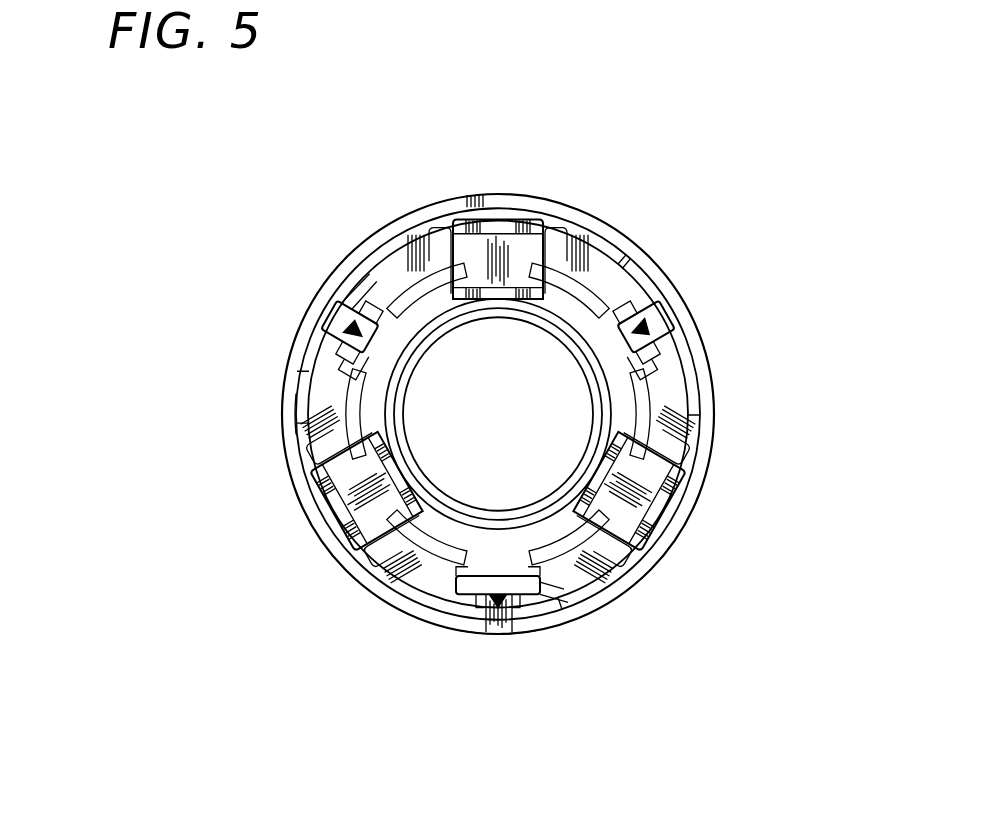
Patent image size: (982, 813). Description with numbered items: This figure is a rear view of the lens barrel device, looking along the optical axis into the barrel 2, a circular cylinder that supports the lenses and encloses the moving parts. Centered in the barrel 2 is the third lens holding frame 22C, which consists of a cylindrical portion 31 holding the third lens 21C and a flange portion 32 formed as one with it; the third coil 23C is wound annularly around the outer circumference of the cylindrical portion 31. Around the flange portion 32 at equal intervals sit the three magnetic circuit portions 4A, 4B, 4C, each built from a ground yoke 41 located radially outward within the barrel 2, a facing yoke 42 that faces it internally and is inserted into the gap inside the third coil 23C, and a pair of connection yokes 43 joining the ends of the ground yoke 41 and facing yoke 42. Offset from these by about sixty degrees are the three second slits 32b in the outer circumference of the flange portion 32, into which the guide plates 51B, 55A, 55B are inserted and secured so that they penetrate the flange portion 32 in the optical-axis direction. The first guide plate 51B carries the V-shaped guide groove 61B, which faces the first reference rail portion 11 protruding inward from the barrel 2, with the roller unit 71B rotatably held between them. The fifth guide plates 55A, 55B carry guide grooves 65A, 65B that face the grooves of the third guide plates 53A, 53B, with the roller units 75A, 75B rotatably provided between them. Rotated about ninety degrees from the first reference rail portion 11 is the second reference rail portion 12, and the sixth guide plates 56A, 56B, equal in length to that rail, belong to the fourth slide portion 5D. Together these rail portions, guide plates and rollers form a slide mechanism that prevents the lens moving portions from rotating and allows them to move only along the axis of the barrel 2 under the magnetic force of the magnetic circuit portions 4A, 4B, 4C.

The barrel 2 is at (632, 600).
The second reference rail portion 12 is at (694, 398).
The second slits 32b is at (645, 382).
The cylindrical portion 31 is at (312, 424).
The third lens holding frame 22C is at (320, 397).
The flange portion 32 is at (576, 582).
The guide groove 65B is at (584, 372).
The guide groove 65A is at (416, 364).
The guide groove 61B is at (503, 532).
The first magnetic circuit portion 4A is at (501, 230).
The second magnetic circuit portion 4B is at (343, 517).
The third magnetic circuit portion 4C is at (672, 533).
The facing yoke 42 is at (465, 262).
The connection yoke 43 is at (490, 262).
The ground yoke 41 is at (523, 228).
The third coil 23C is at (543, 350).
The third lens 21C is at (625, 300).
The third guide plate 53A is at (343, 307).
The fifth guide plate 55A is at (330, 343).
The roller unit 75A is at (330, 337).
The sixth guide plate 56B is at (385, 242).
The third guide plate 53B is at (660, 330).
The fifth guide plate 55B is at (635, 305).
The roller unit 75B is at (657, 312).
The first guide plate 51B is at (541, 610).
The roller unit 71B is at (505, 612).
The first reference rail portion 11 is at (487, 612).
The sixth guide plate 56A is at (416, 590).
The fourth slide portion 5D is at (529, 640).